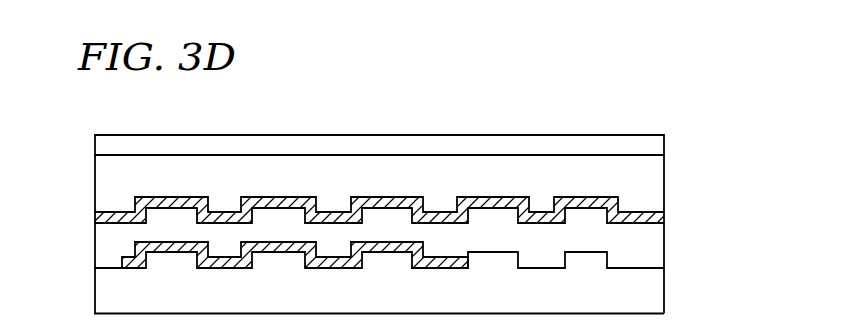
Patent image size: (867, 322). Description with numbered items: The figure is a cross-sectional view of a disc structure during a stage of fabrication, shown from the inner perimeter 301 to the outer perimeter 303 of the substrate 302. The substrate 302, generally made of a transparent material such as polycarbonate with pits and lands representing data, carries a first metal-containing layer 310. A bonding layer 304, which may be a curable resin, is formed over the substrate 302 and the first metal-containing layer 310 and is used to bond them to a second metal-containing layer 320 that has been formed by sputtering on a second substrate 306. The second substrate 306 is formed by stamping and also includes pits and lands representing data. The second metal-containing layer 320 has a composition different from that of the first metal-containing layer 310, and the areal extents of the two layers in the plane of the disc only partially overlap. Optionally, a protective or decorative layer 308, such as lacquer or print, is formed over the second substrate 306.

The inner perimeter 301 is at (96, 290).
The substrate 302 is at (593, 307).
The outer perimeter 303 is at (665, 297).
The bonding layer 304 is at (654, 244).
The second substrate 306 is at (650, 179).
The protective or decorative layer 308 is at (387, 141).
The first metal-containing layer 310 is at (136, 247).
The second metal-containing layer 320 is at (96, 211).